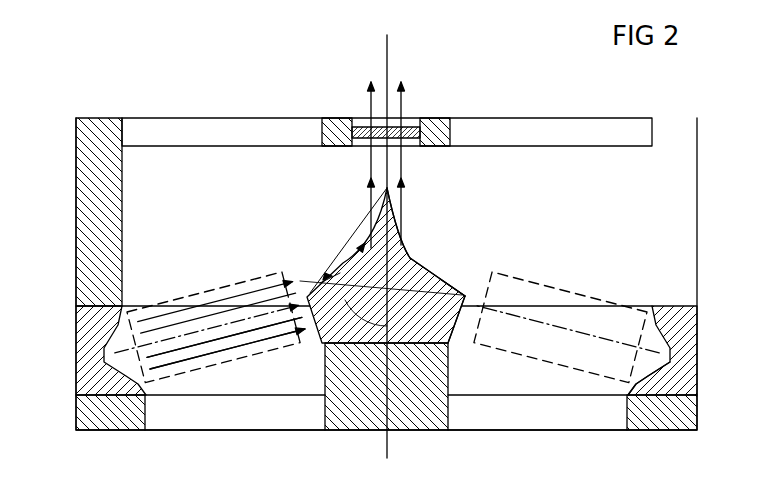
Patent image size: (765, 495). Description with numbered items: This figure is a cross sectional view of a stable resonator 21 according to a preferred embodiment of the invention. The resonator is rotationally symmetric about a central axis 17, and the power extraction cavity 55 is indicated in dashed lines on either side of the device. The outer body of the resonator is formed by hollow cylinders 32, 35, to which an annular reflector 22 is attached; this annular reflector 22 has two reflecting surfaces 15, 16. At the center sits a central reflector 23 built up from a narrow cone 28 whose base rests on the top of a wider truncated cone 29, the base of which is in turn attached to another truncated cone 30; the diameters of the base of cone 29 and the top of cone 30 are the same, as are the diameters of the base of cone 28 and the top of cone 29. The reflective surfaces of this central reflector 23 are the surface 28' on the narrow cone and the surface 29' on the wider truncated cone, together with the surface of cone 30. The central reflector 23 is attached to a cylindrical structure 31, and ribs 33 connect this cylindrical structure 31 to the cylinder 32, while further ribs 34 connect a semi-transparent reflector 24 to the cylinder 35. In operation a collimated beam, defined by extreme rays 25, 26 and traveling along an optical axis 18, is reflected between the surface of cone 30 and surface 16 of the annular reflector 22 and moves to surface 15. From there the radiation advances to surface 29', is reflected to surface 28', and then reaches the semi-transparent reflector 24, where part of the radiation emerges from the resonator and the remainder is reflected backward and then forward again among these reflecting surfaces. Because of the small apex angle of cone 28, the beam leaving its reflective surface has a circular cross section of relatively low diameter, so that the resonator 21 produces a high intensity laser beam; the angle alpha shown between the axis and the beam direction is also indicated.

The reflecting surface 15 is at (650, 326).
The reflecting surface 16 is at (648, 374).
The central axis 17 is at (387, 71).
The optical axis 18 is at (206, 330).
The stable resonator 21 is at (500, 108).
The annular reflector 22 is at (88, 325).
The central reflector 23 is at (334, 264).
The semi-transparent reflector 24 is at (412, 126).
The extreme ray 25 is at (274, 342).
The extreme ray 26 is at (236, 340).
The narrow cone 28 is at (382, 265).
The reflective surface of cone 28 28' is at (415, 217).
The truncated cone 29 is at (466, 279).
The reflective surface of cone 29 29' is at (439, 268).
The truncated cone 30 is at (467, 322).
The cylindrical structure 31 is at (428, 418).
The hollow cylinder 32 is at (110, 412).
The ribs 33 is at (226, 415).
The ribs 34 is at (219, 131).
The hollow cylinder 35 is at (90, 211).
The power extraction cavity 55 is at (204, 305).